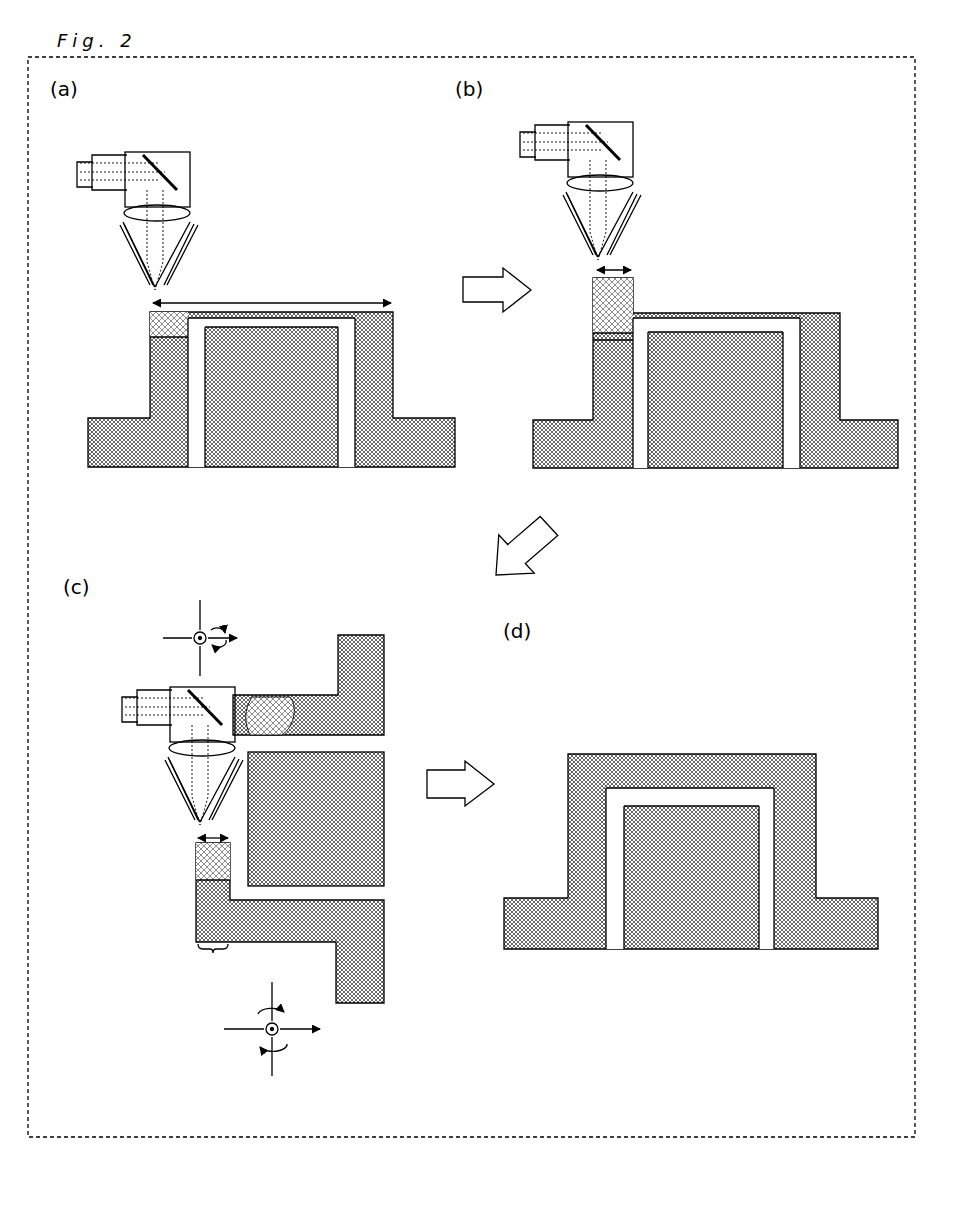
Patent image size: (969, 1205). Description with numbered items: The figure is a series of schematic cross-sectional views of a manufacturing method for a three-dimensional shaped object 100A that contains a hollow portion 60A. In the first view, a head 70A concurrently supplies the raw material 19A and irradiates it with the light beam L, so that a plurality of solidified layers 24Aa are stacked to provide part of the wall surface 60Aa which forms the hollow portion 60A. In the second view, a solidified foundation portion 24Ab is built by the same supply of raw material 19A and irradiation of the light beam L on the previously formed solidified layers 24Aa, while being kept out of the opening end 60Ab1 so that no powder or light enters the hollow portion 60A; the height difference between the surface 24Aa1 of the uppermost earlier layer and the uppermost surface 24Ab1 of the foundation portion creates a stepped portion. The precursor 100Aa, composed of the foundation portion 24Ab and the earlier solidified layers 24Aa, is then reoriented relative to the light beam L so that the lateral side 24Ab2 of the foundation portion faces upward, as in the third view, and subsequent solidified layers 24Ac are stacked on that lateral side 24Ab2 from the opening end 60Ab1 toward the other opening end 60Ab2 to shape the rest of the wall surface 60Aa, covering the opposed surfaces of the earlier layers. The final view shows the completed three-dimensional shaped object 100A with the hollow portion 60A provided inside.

The light beam L is at (150, 288).
The raw material 19A is at (150, 293).
The solidified layers 24Aa is at (150, 322).
The wall surface 60Aa is at (393, 322).
The hollow portion 60A is at (350, 365).
The head 70A is at (625, 140).
The precursor 100Aa is at (856, 238).
The uppermost surface of the solidified foundation portion 24Ab1 is at (616, 275).
The solidified foundation portion 24Ab is at (640, 293).
The surface of the uppermost layer 24Aa1 is at (645, 315).
The opening end 60Ab1 is at (593, 336).
The opening end 60Ab2 is at (253, 697).
The subsequent solidified layers 24Ac is at (196, 860).
The lateral side of the solidified foundation portion 24Ab2 is at (196, 888).
The three-dimensional shaped object 100A is at (824, 732).